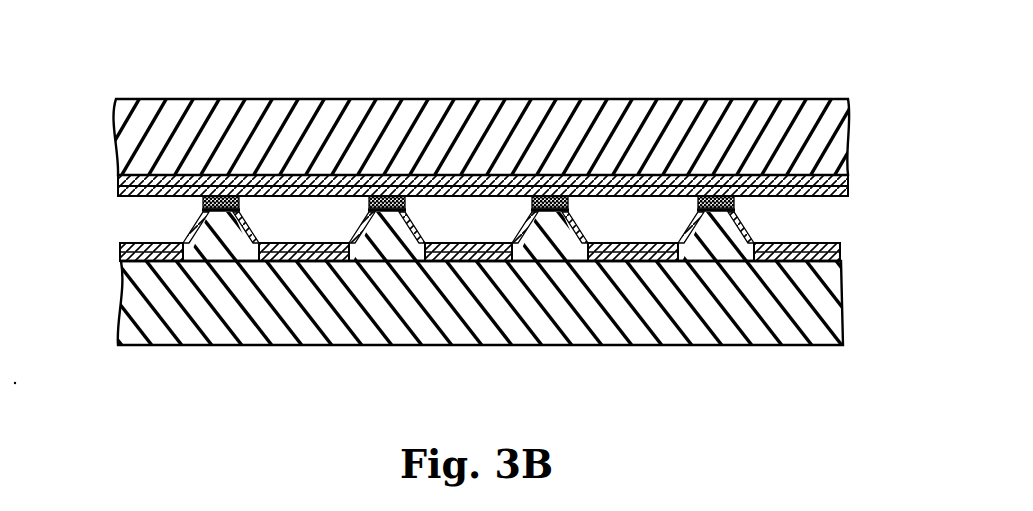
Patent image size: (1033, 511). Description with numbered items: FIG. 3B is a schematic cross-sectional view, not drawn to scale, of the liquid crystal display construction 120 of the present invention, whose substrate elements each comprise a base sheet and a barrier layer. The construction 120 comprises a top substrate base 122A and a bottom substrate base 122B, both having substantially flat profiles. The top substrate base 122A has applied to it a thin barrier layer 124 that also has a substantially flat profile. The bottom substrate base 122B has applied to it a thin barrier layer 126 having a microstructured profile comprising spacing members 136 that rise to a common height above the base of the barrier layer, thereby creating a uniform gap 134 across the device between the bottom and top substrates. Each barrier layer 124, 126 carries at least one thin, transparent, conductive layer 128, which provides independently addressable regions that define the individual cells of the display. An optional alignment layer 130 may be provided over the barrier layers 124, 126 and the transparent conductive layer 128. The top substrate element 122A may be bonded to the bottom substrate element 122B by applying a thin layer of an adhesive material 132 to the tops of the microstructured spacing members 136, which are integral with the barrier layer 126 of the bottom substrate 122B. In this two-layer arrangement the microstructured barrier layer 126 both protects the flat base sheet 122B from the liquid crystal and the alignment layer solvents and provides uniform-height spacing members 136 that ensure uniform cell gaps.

The construction 120 is at (101, 95).
The top substrate base 122A is at (797, 128).
The bottom substrate base 122B is at (782, 300).
The thin barrier layer 124 is at (846, 177).
The thin barrier layer 126 is at (838, 254).
The transparent conductive layer 128 is at (152, 198).
The alignment layer 130 is at (812, 192).
The adhesive material 132 is at (224, 198).
The uniform gap 134 is at (322, 216).
The spacing members 136 is at (541, 232).